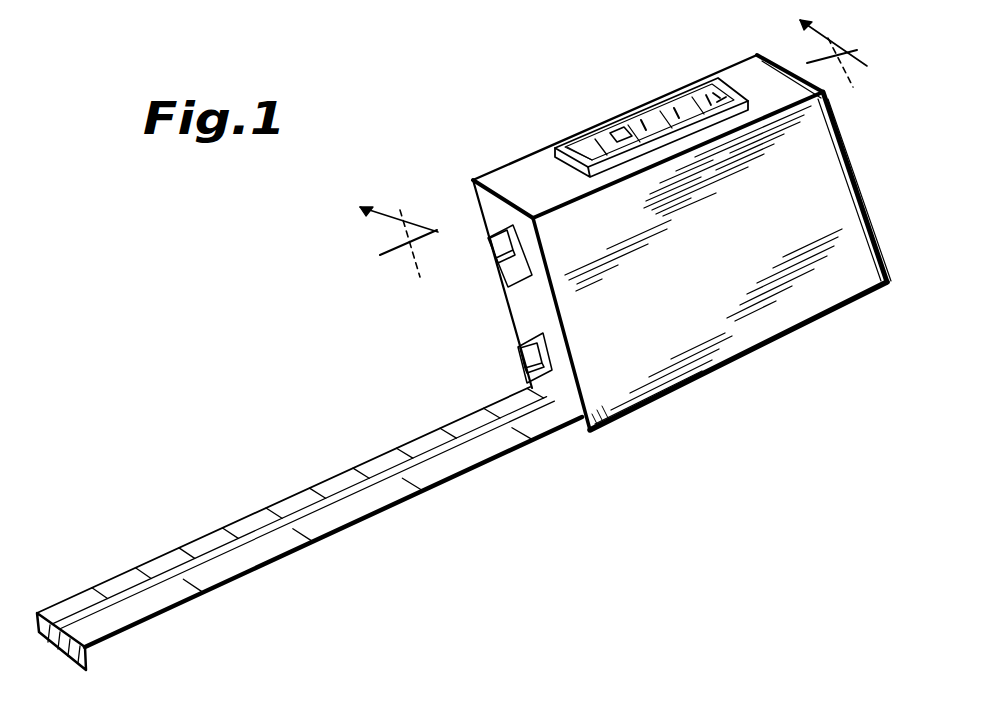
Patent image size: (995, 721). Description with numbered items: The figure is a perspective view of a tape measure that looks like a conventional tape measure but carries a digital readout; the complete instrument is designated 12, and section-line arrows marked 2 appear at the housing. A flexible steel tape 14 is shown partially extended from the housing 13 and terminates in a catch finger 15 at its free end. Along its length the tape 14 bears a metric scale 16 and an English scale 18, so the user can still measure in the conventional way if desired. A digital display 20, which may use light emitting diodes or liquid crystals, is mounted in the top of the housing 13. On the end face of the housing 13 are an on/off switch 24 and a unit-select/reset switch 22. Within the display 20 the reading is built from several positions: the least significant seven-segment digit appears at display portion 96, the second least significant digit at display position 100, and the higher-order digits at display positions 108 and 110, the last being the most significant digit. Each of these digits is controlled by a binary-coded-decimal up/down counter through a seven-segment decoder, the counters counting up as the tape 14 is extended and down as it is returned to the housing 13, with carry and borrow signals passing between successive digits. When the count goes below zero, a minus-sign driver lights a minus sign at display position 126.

The section line 2- 2 is at (613, 138).
The measuring instrument 12 is at (463, 332).
The housing 13 is at (807, 315).
The flexible steel tape 14 is at (456, 481).
The catch finger 15 is at (63, 647).
The metric scale 16 is at (228, 527).
The English scale 18 is at (268, 563).
The digital display 20 is at (620, 173).
The unit-select/reset switch 22 is at (522, 358).
The on/off switch 24 is at (487, 252).
The display portion 96 is at (697, 112).
The display position 100 is at (665, 118).
The display position 108 is at (630, 132).
The display position 110 is at (598, 145).
The display position 126 is at (576, 148).